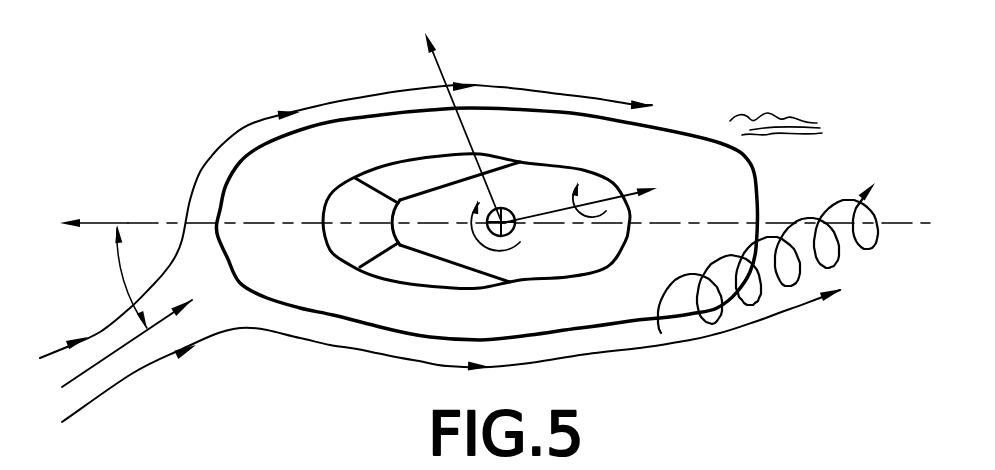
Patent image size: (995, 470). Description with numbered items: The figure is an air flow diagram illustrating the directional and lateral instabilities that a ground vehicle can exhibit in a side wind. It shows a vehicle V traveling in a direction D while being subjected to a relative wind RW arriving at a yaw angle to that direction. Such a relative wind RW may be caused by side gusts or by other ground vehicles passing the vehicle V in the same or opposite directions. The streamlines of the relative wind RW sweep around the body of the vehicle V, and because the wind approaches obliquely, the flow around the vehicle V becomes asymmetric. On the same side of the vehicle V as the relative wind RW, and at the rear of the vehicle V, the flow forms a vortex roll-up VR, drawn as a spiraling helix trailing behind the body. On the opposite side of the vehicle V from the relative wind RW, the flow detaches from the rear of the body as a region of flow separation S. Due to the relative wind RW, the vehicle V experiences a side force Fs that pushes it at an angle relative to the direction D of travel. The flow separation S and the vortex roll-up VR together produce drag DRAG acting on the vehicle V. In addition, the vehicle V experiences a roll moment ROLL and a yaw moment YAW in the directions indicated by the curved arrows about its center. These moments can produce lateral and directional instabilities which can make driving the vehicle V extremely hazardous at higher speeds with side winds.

The direction of travel D is at (484, 222).
The relative wind RW is at (441, 262).
The vehicle V is at (338, 297).
The side force Fs is at (446, 128).
The drag DRAG is at (608, 196).
The roll moment ROLL is at (559, 198).
The yaw moment YAW is at (512, 235).
The flow separation S is at (788, 110).
The vortex roll-up VR is at (848, 267).